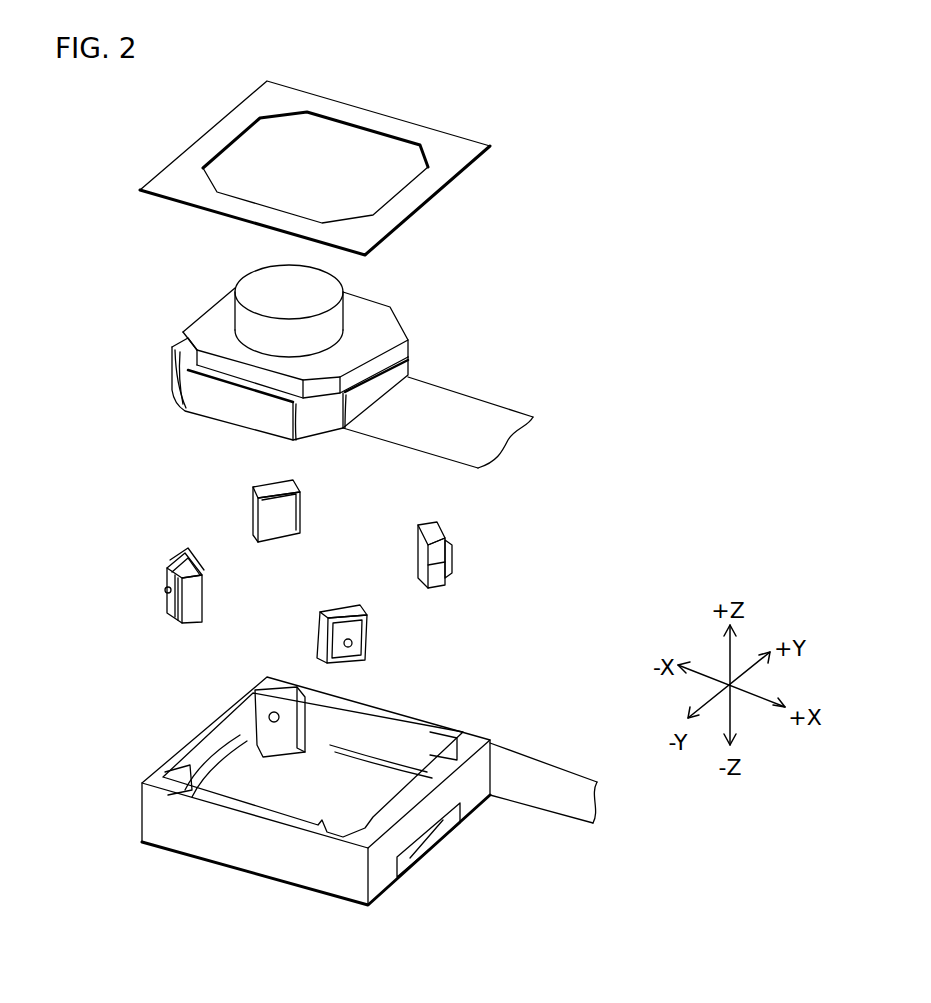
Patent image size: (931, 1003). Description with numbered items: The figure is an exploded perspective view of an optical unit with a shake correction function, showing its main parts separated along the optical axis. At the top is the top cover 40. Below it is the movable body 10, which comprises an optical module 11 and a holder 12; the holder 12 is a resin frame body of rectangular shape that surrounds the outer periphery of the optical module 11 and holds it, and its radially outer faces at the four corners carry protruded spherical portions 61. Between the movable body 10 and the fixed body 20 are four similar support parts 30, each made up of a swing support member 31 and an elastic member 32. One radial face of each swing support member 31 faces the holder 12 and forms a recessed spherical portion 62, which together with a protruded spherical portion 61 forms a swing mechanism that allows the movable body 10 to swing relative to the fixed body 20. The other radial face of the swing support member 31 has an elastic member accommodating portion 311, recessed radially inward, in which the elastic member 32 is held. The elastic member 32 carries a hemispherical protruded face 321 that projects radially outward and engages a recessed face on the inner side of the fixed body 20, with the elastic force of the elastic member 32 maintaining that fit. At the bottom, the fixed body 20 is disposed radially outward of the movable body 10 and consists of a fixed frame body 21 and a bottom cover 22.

The movable body 10 is at (321, 370).
The optical module 11 is at (222, 303).
The holder 12 is at (227, 395).
The fixed body 20 is at (337, 795).
The fixed frame body 21 is at (160, 820).
The bottom cover 22 is at (230, 870).
The support part 30 is at (286, 571).
The swing support member 31 is at (161, 600).
The elastic member 32 is at (172, 567).
The elastic member accommodating portion 311 is at (456, 569).
The protruded face 321 is at (165, 590).
The top cover 40 is at (432, 187).
The protruded spherical portion 61 is at (172, 380).
The recessed spherical portion 62 is at (425, 568).